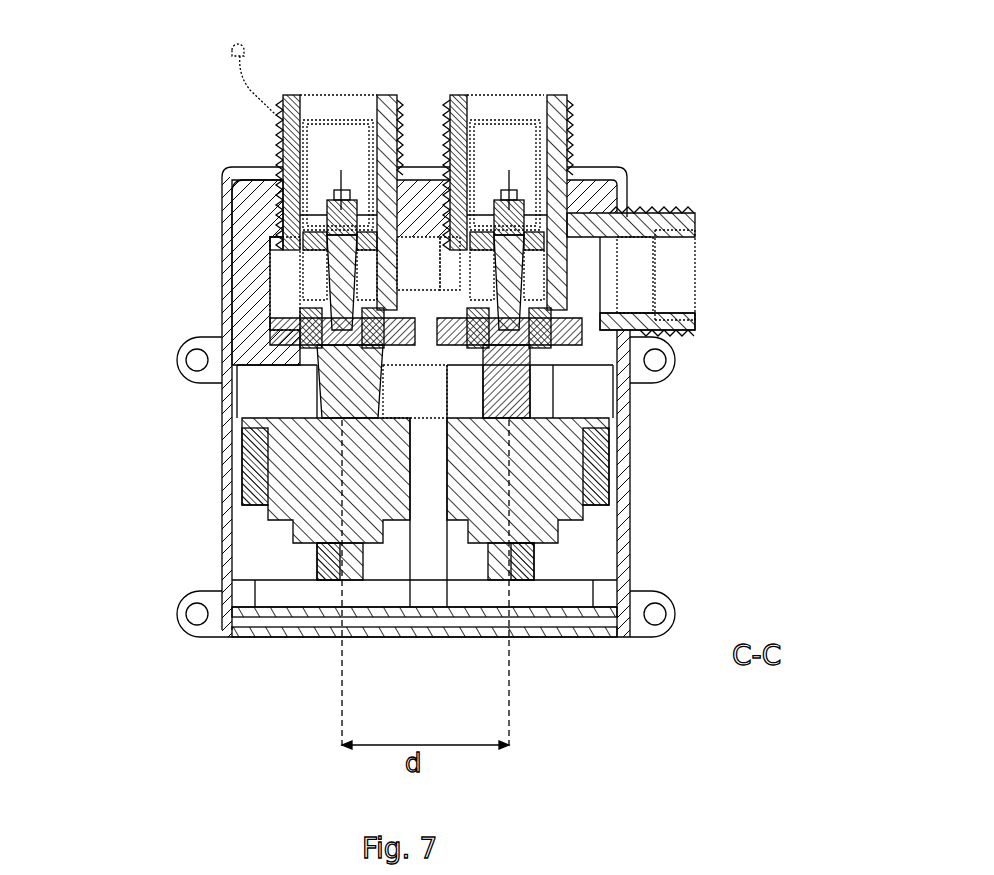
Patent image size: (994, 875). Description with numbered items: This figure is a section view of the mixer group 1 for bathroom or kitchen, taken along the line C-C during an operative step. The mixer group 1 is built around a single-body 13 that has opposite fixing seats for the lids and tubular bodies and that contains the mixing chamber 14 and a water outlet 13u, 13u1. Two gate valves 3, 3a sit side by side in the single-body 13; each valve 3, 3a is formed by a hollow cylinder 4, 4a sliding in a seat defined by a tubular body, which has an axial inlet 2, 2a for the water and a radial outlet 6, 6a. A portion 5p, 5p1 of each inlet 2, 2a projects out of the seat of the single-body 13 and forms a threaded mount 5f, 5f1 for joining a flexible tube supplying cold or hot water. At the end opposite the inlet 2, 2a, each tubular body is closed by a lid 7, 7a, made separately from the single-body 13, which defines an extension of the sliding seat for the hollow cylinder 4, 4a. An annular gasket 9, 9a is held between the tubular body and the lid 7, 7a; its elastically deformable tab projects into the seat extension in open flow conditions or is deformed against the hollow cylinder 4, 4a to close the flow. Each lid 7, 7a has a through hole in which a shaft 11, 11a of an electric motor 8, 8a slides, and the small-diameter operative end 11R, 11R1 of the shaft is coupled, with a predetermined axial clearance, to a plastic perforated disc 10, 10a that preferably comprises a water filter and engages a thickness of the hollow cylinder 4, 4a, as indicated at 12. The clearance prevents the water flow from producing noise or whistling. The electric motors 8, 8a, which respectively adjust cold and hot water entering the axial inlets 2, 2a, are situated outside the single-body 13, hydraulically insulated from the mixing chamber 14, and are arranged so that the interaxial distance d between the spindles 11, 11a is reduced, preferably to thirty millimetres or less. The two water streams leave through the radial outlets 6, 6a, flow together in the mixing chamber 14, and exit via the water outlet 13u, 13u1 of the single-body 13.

The mixer group 1 is at (124, 136).
The axial inlet 2 is at (368, 92).
The axial inlet 2a is at (537, 92).
The valve 3 is at (315, 132).
The valve 3a is at (482, 132).
The hollow cylinder 4 is at (384, 110).
The hollow cylinder 4a is at (570, 120).
The threaded mount 5f is at (281, 95).
The threaded mount 5f1 is at (566, 98).
The portion of the inlet 5p is at (281, 137).
The portion of the inlet 5p1 is at (570, 145).
The radial outlet 6 is at (272, 262).
The radial outlet 6a is at (458, 238).
The lid 7 is at (300, 322).
The lid 7a is at (543, 330).
The electric motor 8 is at (328, 568).
The electric motor 8a is at (518, 565).
The annular gasket 9 is at (305, 318).
The annular gasket 9a is at (557, 307).
The perforated disc 10 is at (317, 217).
The perforated disc 10a is at (534, 216).
The shaft 11 is at (335, 273).
The shaft 11a is at (515, 271).
The small-diameter operative end 11R is at (341, 184).
The small-diameter operative end 11R1 is at (512, 184).
The engagement of the perforated disc with the hollow cylinder thickness 12 is at (563, 216).
The single-body 13 is at (248, 200).
The water outlet 13u is at (270, 243).
The water outlet 13u1 is at (583, 245).
The mixing chamber 14 is at (403, 247).